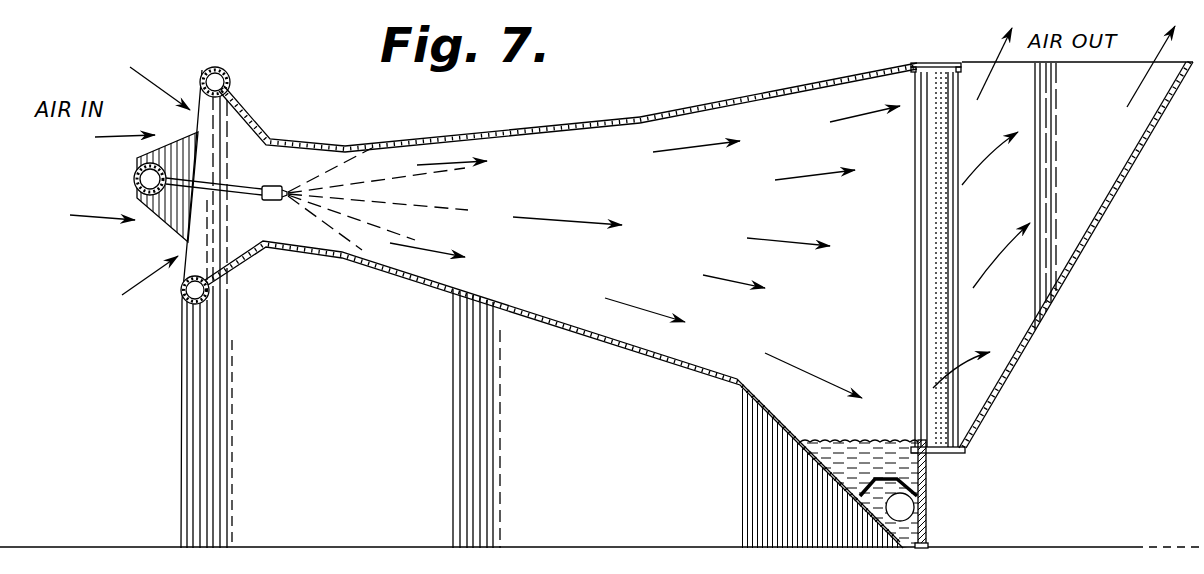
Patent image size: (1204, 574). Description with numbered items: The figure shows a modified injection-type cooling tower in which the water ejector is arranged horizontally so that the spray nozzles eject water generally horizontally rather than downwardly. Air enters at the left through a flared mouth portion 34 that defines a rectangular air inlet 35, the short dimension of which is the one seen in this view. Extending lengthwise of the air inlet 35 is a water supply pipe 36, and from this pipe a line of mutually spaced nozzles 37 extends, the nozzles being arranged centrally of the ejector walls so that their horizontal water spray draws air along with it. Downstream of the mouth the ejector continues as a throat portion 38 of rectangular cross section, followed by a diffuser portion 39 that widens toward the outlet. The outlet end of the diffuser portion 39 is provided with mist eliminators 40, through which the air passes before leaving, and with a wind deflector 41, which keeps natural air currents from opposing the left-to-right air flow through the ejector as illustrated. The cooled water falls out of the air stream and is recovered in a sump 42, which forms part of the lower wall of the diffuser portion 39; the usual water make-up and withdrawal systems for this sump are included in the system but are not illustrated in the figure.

The flared mouth portion 34 is at (222, 112).
The air inlet 35 is at (207, 230).
The water supply pipe 36 is at (133, 177).
The nozzles 37 is at (272, 184).
The throat portion 38 is at (302, 140).
The diffuser portion 39 is at (775, 93).
The mist eliminators 40 is at (933, 242).
The wind deflector 41 is at (1088, 236).
The sump 42 is at (922, 466).